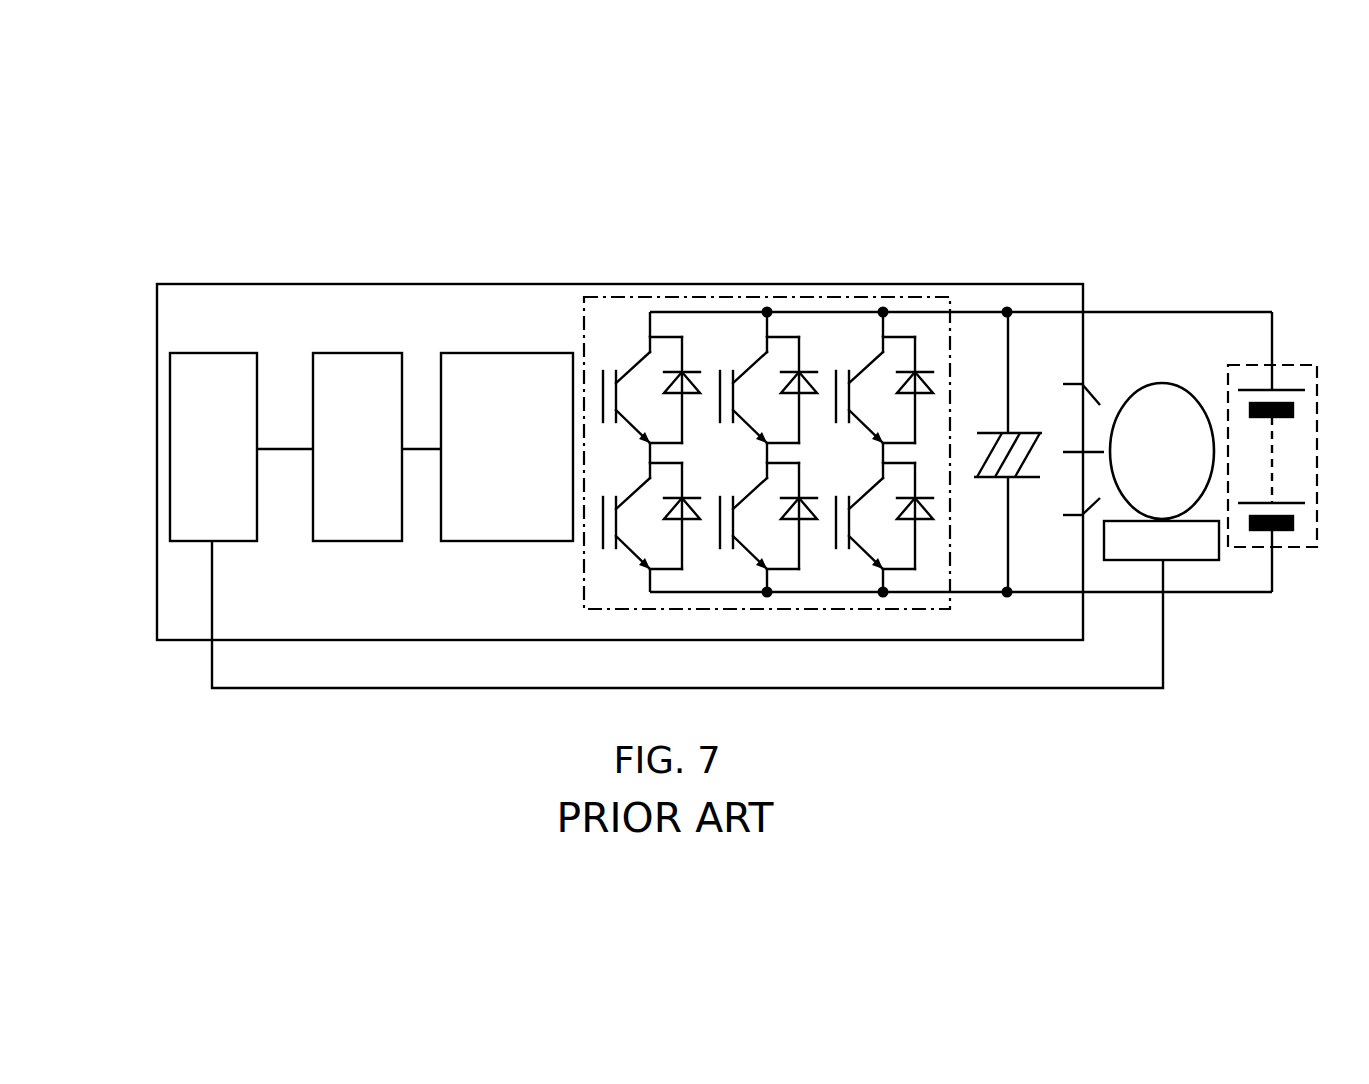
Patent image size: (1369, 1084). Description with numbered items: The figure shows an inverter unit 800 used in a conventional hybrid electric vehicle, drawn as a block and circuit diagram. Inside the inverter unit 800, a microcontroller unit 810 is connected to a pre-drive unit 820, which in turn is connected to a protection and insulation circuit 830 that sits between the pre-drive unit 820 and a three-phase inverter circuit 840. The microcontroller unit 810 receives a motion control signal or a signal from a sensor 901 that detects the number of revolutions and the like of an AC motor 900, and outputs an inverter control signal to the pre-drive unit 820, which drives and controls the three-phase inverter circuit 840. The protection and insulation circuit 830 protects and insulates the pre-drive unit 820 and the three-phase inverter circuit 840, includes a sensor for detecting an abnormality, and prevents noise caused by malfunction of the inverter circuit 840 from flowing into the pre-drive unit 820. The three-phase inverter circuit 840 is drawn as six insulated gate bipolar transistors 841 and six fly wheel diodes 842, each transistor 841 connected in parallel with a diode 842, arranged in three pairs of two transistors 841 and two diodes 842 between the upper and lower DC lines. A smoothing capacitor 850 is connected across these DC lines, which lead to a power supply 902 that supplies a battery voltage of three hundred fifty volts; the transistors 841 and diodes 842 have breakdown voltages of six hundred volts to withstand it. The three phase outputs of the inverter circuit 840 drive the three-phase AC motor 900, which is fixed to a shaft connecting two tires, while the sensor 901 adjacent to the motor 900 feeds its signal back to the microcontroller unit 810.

The inverter unit 800 is at (205, 283).
The microcontroller unit (MCU) 810 is at (198, 352).
The pre-drive unit (PDU) 820 is at (363, 352).
The protection and insulation circuit 830 is at (520, 352).
The three-phase inverter circuit 840 is at (759, 417).
The insulated gate bipolar transistor (IGBT) 841 is at (641, 364).
The fly wheel diode (FwDi) 842 is at (692, 371).
The smoothing capacitor 850 is at (1033, 432).
The AC motor 900 is at (1161, 383).
The sensor 901 is at (1192, 561).
The power supply 902 is at (1290, 365).